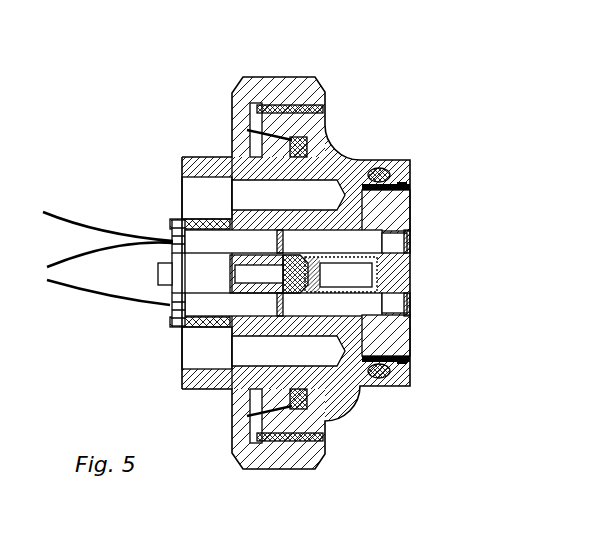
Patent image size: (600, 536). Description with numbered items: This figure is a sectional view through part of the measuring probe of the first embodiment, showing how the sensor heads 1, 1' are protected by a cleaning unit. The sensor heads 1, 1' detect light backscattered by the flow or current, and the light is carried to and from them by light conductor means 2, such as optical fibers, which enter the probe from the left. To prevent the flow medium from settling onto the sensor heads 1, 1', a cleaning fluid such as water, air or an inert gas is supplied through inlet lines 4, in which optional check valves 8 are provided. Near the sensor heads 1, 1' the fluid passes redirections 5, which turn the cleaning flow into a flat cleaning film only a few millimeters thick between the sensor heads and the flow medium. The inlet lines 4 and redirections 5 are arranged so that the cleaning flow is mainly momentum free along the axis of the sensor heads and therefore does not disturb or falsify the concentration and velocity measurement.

The sensor head 1 is at (429, 225).
The sensor head 1' is at (425, 307).
The light conductor means 2 is at (58, 216).
The inlet line 4 is at (357, 272).
The redirection 5 is at (393, 243).
The check valve 8 is at (260, 252).